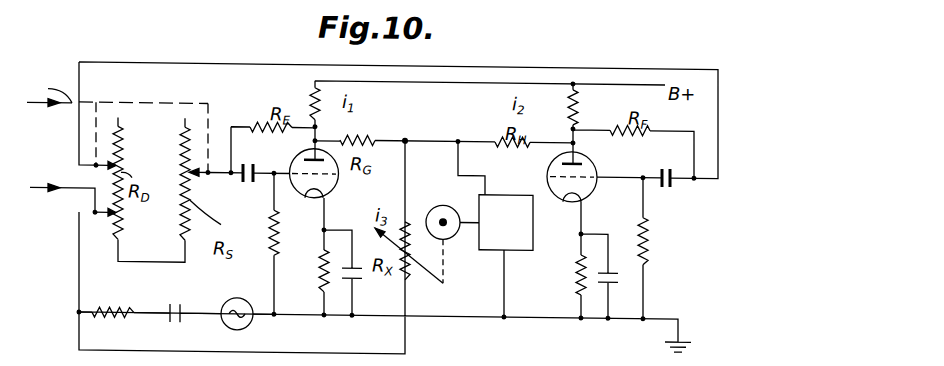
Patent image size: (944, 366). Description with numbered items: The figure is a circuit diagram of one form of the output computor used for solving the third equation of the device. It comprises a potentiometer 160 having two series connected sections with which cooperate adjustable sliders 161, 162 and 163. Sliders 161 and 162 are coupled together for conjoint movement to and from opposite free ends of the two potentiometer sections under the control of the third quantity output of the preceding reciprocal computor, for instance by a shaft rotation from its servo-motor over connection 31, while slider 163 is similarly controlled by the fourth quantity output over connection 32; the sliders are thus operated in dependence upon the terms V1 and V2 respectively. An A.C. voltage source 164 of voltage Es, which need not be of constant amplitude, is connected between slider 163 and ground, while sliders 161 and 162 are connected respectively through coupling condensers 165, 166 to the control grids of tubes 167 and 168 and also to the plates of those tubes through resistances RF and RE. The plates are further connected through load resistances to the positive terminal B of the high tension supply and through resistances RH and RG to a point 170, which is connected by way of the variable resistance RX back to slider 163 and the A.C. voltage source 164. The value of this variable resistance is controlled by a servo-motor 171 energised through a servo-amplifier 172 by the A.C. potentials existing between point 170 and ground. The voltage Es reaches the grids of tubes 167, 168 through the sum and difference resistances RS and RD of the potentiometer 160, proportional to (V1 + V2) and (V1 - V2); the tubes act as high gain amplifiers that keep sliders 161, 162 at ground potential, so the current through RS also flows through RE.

The connection 31 is at (72, 103).
The connection 32 is at (66, 190).
The potentiometer 160 is at (151, 189).
The slider 161 is at (107, 165).
The slider 162 is at (205, 167).
The slider 163 is at (84, 215).
The A. C. voltage source 164 is at (242, 327).
The coupling condenser 165 is at (666, 182).
The coupling condenser 166 is at (249, 180).
The tube 167 is at (597, 172).
The tube 168 is at (338, 168).
The point 170 is at (406, 134).
The servo-motor 171 is at (455, 196).
The servo-amplifier 172 is at (502, 189).